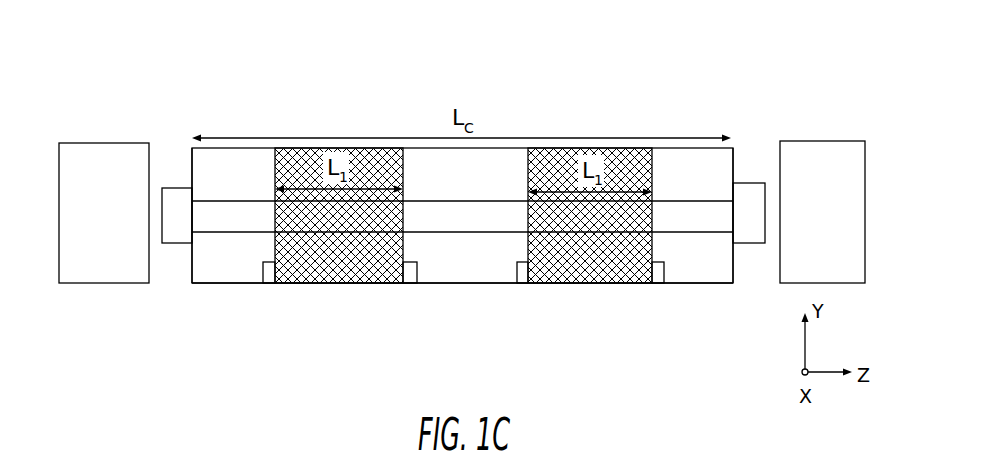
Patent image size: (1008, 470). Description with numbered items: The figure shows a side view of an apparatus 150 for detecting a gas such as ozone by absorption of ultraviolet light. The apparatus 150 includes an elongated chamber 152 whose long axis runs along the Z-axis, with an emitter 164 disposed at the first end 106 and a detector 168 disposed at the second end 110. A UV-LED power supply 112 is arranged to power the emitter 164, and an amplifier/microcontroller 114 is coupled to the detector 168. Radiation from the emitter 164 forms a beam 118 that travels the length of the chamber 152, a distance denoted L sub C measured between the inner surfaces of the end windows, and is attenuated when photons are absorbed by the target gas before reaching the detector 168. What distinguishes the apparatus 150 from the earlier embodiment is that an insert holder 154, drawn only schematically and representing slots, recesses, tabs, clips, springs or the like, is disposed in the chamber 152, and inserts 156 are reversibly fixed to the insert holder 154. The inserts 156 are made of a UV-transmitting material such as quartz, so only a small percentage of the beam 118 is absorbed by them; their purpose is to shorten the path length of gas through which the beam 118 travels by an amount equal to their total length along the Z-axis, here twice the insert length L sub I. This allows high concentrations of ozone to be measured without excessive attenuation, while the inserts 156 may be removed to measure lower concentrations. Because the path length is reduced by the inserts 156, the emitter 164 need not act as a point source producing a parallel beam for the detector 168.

The apparatus 150 is at (462, 154).
The chamber 152 is at (692, 285).
The first end 106 is at (208, 239).
The second end 110 is at (726, 248).
The beam 118 is at (483, 200).
The inserts 156 is at (313, 274).
The insert holder 154 is at (267, 284).
The emitter 164 is at (173, 188).
The detector 168 is at (745, 182).
The UV-LED power supply 112 is at (98, 142).
The amplifier/microcontroller 114 is at (827, 141).